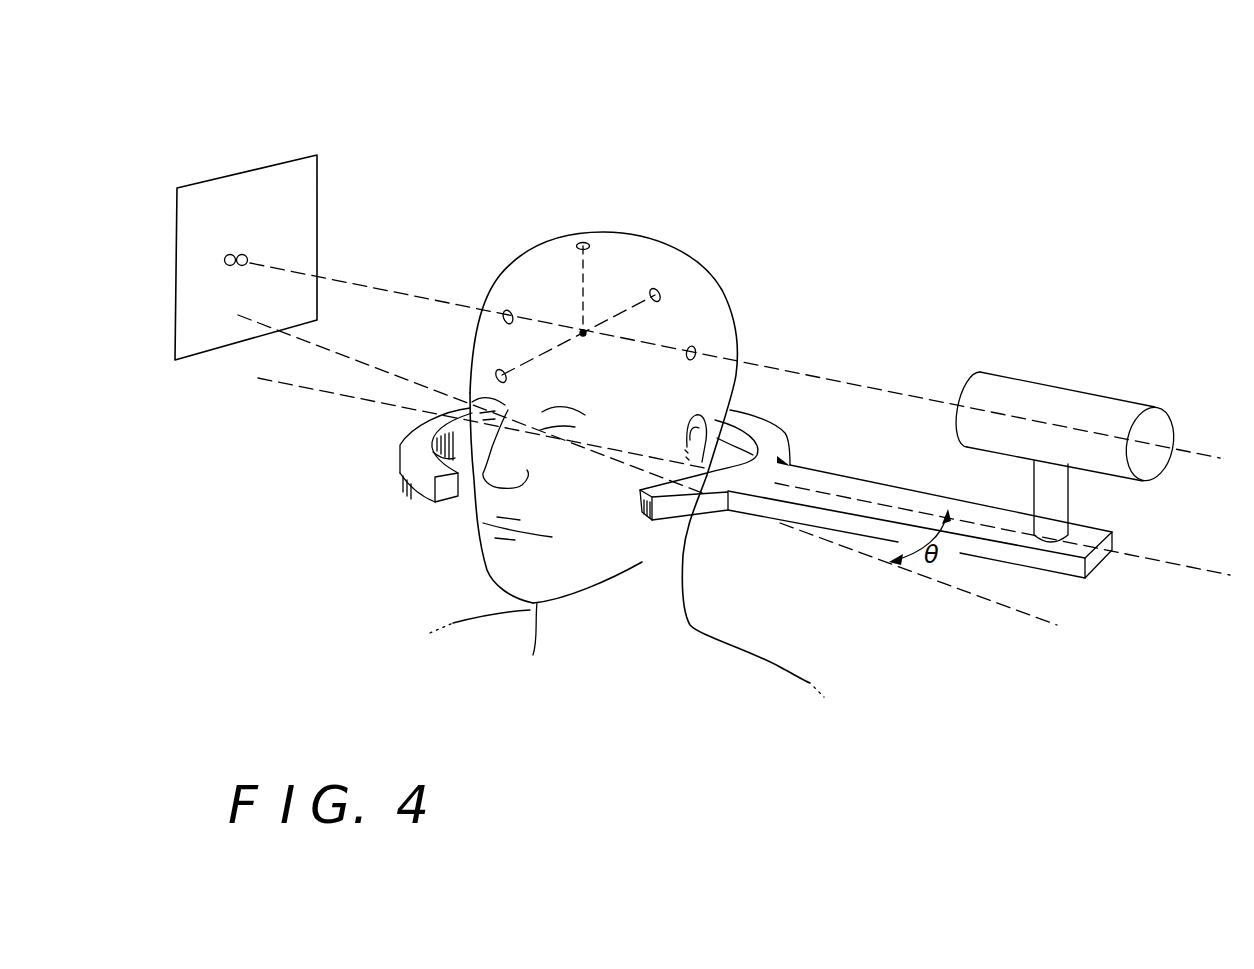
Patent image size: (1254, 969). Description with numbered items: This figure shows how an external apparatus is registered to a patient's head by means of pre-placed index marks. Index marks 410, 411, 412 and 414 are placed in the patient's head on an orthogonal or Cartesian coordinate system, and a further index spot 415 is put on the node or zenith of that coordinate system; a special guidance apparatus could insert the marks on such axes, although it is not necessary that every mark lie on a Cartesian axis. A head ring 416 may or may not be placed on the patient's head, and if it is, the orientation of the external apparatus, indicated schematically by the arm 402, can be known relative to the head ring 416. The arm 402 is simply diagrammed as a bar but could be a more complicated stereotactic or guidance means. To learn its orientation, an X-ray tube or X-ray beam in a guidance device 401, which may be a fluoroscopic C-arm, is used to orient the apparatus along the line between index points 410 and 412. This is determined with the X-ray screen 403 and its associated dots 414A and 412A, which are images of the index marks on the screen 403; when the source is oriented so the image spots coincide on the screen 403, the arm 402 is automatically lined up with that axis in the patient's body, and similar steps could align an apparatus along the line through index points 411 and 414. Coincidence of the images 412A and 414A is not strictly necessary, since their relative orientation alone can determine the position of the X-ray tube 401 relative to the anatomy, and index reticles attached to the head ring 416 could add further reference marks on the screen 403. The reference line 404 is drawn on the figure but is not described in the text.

The X-ray guidance device 401 is at (1016, 384).
The arm 402 is at (1100, 533).
The X-ray screen 403 is at (306, 170).
The reference line 404 is at (1157, 563).
The index mark 410 is at (508, 310).
The index mark 411 is at (659, 292).
The index mark 412 is at (696, 351).
The image dot 412A is at (230, 255).
The index mark 414 is at (497, 376).
The image dot 414A is at (243, 255).
The index spot 415 is at (583, 242).
The head ring 416 is at (423, 493).